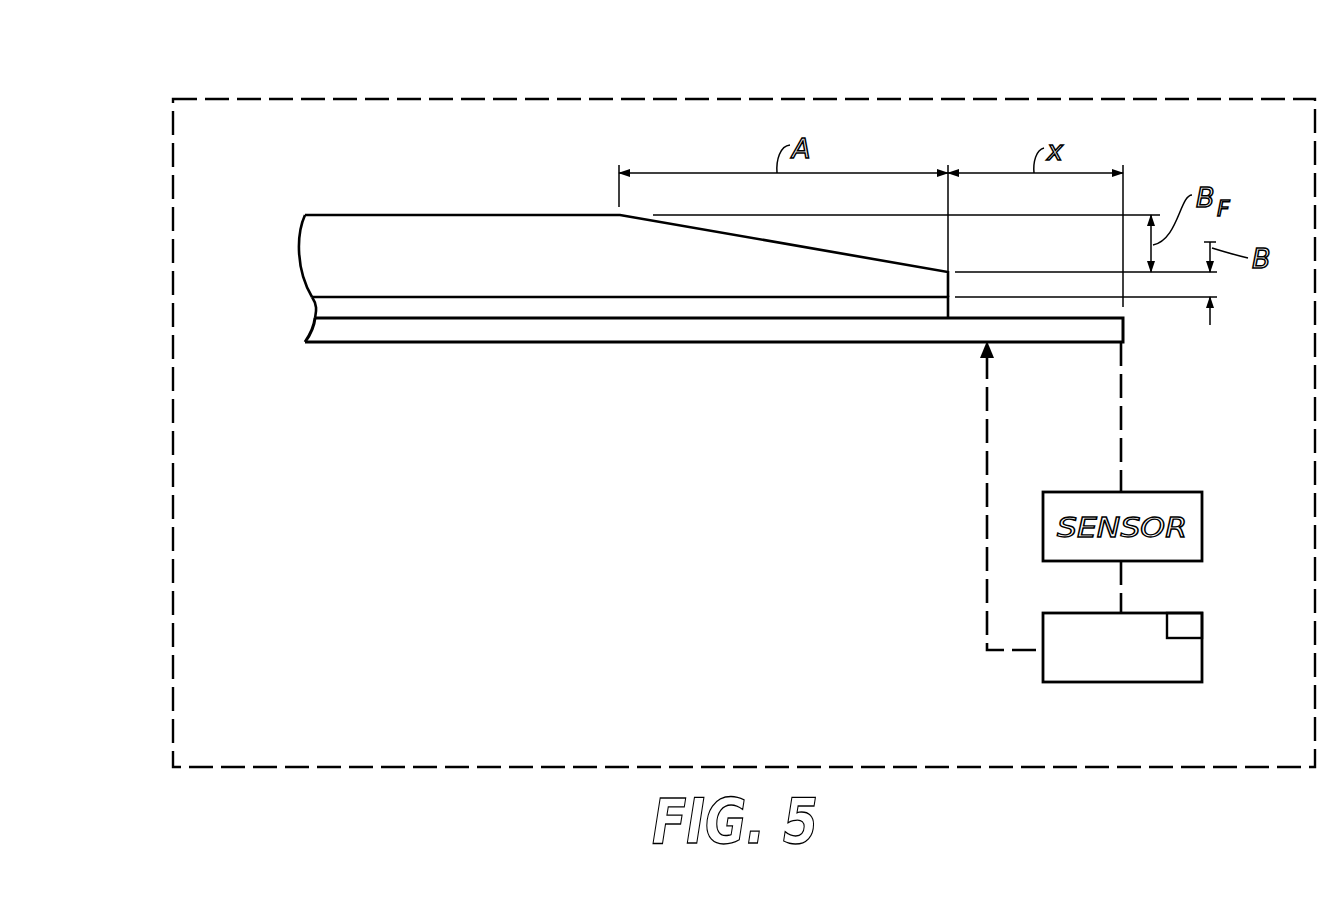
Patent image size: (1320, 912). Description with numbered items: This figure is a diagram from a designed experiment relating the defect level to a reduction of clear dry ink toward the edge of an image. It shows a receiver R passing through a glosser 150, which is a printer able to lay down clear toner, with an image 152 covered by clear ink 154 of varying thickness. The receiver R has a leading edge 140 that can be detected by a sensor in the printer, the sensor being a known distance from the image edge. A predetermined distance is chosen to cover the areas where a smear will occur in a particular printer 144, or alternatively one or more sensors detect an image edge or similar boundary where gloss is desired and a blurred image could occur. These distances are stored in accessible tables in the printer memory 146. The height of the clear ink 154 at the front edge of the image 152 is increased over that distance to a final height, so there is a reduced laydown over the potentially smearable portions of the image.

The glosser 150 is at (470, 96).
The clear ink 154 is at (302, 254).
The image 152 is at (310, 315).
The receiver R is at (307, 330).
The leading edge 140 is at (1126, 330).
The printer 144 is at (1187, 683).
The printer memory 146 is at (1203, 620).